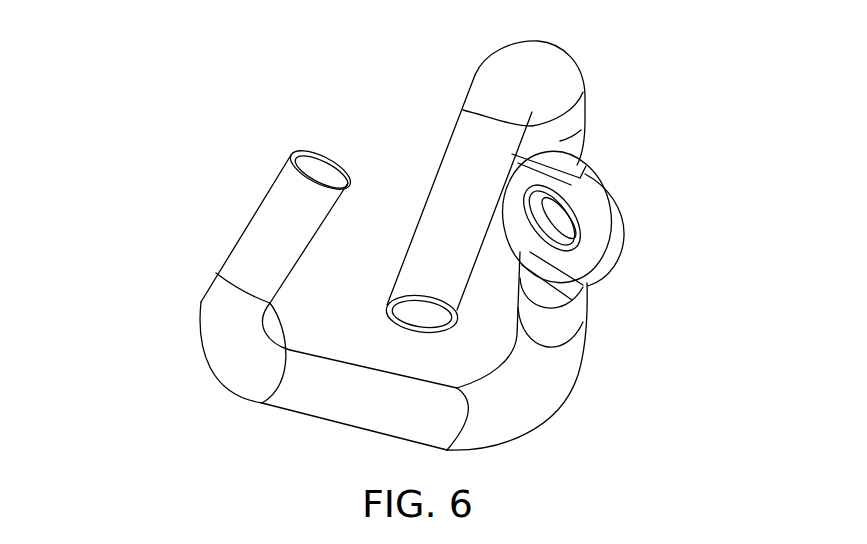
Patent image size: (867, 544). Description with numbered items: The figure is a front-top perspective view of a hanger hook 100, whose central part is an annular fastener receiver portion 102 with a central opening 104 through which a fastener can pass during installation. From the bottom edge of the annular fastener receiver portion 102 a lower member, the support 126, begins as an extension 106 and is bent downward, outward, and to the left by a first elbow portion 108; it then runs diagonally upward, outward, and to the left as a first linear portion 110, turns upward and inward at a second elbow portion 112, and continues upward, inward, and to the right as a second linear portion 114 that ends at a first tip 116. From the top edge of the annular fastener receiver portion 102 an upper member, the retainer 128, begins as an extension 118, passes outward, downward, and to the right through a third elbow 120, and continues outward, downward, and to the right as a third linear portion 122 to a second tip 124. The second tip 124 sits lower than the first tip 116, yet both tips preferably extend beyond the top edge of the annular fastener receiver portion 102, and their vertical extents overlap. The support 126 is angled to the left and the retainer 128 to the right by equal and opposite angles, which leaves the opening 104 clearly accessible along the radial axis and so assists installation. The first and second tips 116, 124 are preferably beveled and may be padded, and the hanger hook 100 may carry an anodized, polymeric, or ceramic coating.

The hanger hook 100 is at (268, 85).
The annular fastener receiver portion 102 is at (578, 200).
The central opening 104 is at (565, 217).
The extension 106 is at (563, 318).
The first elbow portion 108 is at (558, 373).
The first linear portion 110 is at (347, 402).
The second elbow portion 112 is at (220, 332).
The second linear portion 114 is at (277, 197).
The first tip 116 is at (323, 163).
The extension 118 is at (587, 87).
The third elbow 120 is at (513, 60).
The third linear portion 122 is at (493, 143).
The second tip 124 is at (410, 325).
The support 126 is at (170, 250).
The retainer 128 is at (455, 32).